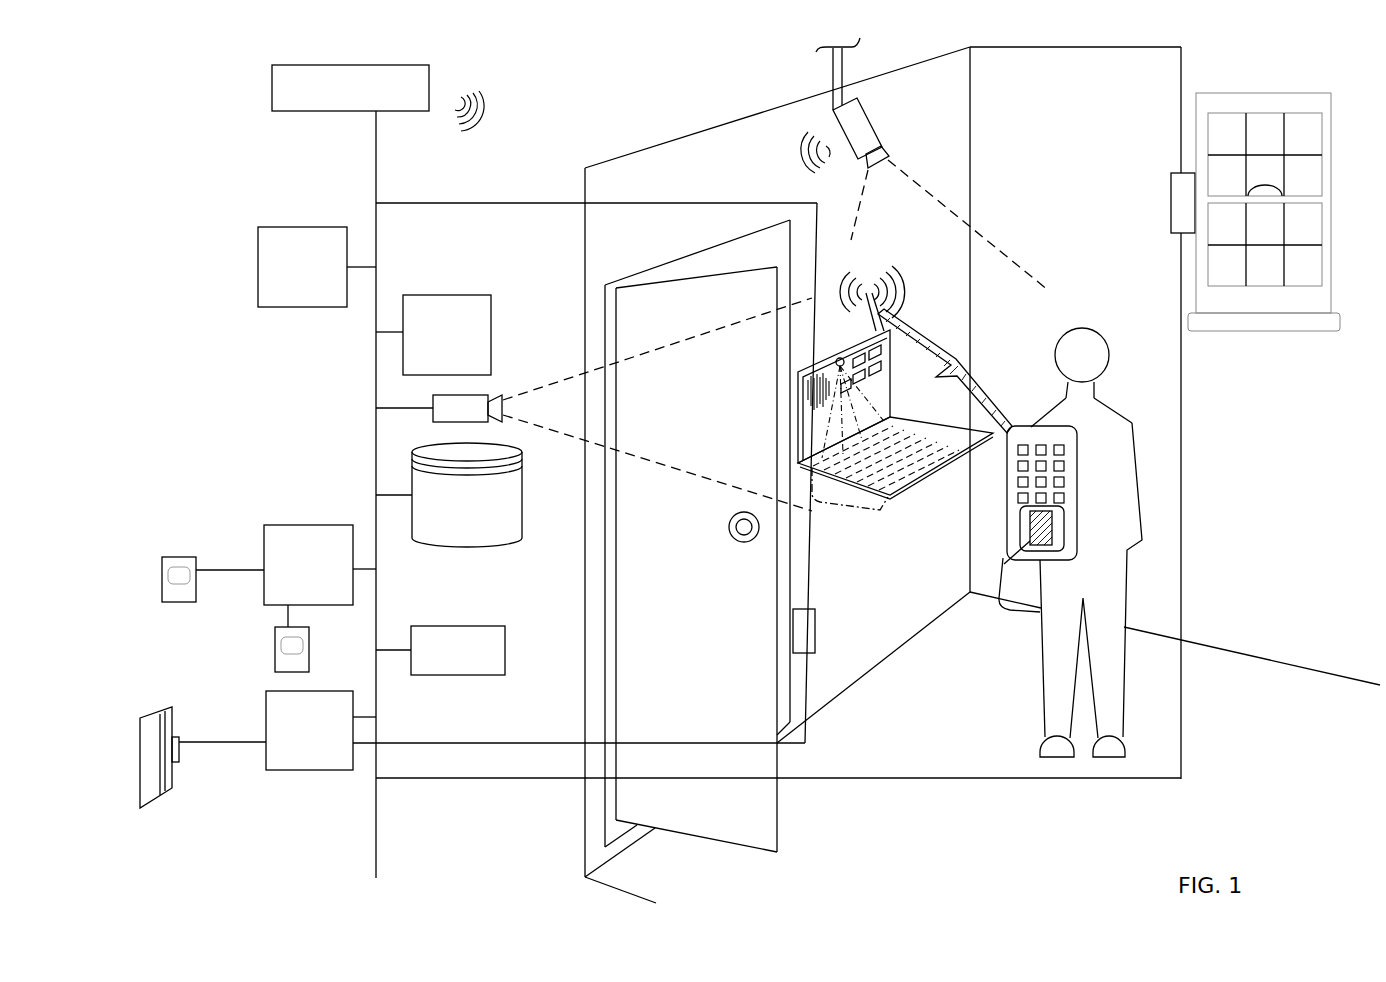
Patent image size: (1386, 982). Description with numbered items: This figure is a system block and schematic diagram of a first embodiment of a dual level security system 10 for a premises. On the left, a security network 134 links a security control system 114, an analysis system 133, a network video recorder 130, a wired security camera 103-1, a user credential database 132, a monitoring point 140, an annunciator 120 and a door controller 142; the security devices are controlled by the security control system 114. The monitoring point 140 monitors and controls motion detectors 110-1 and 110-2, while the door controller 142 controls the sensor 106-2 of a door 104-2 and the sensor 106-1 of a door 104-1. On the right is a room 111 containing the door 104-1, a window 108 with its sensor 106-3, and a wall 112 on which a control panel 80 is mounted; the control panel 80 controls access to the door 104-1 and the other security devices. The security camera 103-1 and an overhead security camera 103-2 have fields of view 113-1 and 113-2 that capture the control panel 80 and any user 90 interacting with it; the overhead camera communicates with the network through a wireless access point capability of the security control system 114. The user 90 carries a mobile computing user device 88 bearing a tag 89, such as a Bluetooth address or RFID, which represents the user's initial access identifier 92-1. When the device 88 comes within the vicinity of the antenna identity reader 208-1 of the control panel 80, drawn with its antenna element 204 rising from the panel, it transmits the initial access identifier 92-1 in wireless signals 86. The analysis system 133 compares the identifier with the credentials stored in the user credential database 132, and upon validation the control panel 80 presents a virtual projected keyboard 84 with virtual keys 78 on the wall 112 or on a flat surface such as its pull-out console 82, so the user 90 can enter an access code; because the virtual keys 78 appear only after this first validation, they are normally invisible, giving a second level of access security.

The dual level security system 10 is at (206, 123).
The security control system 114 is at (378, 98).
The security network 134 is at (376, 153).
The analysis system 133 is at (317, 267).
The network video recorder 130 is at (433, 335).
The security camera 103-1 is at (439, 408).
The field of view 113-1 is at (553, 387).
The user credential database 132 is at (449, 495).
The monitoring point 140 is at (320, 565).
The motion detector 110-1 is at (178, 557).
The motion detector 110-2 is at (275, 658).
The annunciator 120 is at (440, 650).
The door controller 142 is at (535, 730).
The sensor 106-2 is at (180, 737).
The door 104-2 is at (172, 790).
The door 104-1 is at (742, 802).
The sensor 106-1 is at (815, 622).
The wall 112 is at (705, 152).
The room 111 is at (1297, 692).
The overhead security camera 103-2 is at (873, 120).
The field of view 113-2 is at (1008, 290).
The antenna identity reader 208-1 is at (870, 275).
The antenna 204 is at (890, 330).
The control panel 80 is at (800, 392).
The pull-out console 82 is at (893, 497).
The virtual projected keyboard 84 is at (850, 503).
The virtual keys 78 is at (953, 465).
The wireless signals 86 is at (980, 358).
The mobile computing user device 88 is at (1077, 492).
The tag 89 is at (1065, 519).
The user 90 is at (1113, 410).
The initial access identifier 92-1 is at (1003, 575).
The sensor 106-3 is at (1171, 190).
The window 108 is at (1196, 134).